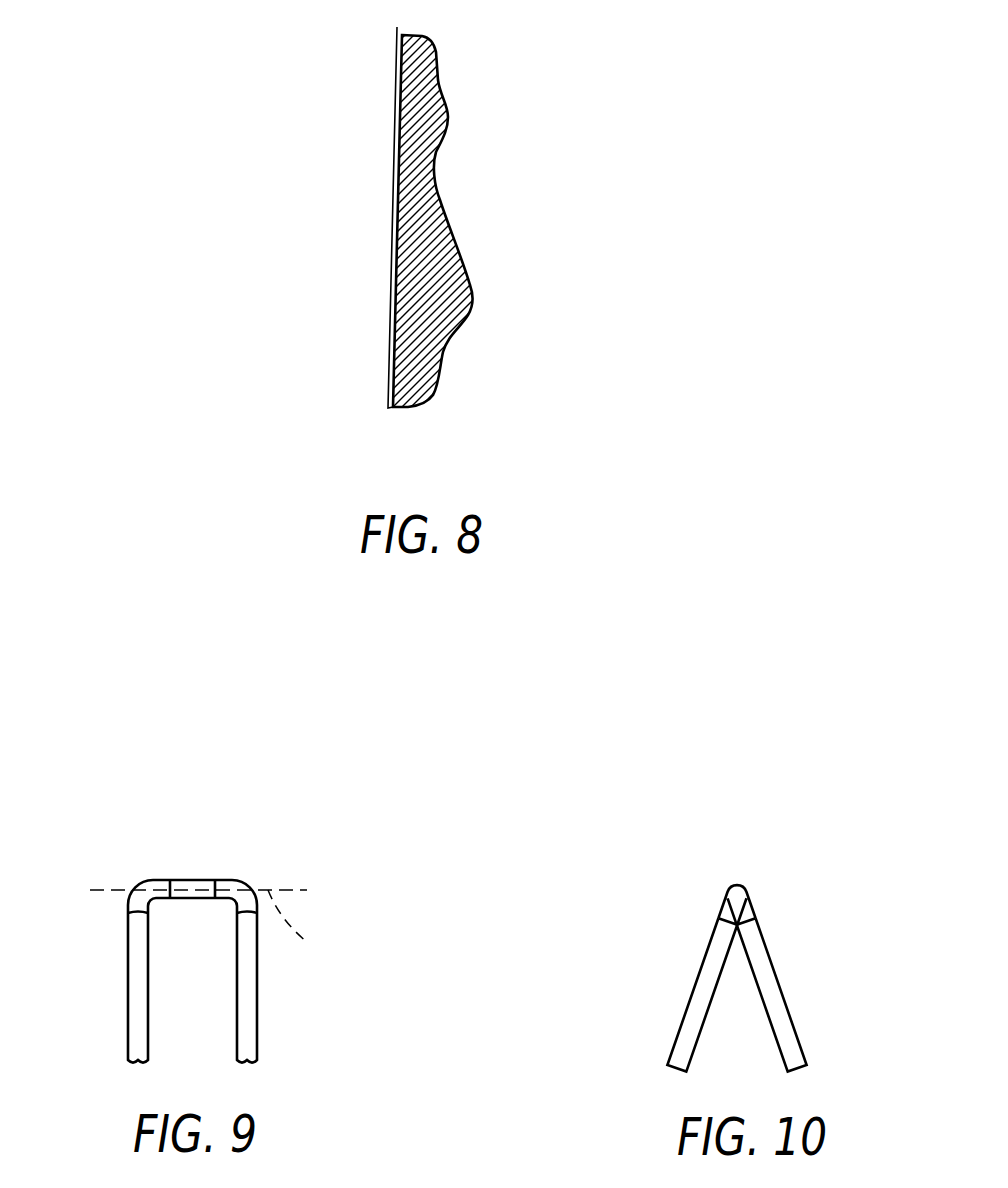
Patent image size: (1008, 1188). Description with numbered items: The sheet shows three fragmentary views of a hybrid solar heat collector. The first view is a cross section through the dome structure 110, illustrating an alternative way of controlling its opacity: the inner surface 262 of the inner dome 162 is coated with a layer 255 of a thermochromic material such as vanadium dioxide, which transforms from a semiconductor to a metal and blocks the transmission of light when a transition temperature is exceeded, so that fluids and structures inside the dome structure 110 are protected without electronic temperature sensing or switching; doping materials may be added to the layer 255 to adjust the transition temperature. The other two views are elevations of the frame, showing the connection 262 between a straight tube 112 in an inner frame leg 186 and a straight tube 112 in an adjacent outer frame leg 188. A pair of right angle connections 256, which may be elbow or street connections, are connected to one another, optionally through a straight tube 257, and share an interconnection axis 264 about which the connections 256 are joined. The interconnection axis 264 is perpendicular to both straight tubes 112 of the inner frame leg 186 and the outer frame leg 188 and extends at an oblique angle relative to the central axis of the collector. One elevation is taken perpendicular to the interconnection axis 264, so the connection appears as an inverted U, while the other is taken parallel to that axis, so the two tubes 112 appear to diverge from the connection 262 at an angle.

In FIG. 8, the dome structure 110 is at (346, 120).
In FIG. 8, the inner dome 162 is at (450, 109).
In FIG. 8, the layer 255 is at (395, 250).
In FIG. 8, the connection 262 is at (395, 332).
In FIG. 9, the connection 262 is at (162, 785).
In FIG. 10, the connection 262 is at (731, 857).
In FIG. 9, the right angle connections 256 is at (152, 878).
In FIG. 10, the right angle connections 256 is at (723, 903).
In FIG. 9, the straight tube 257 is at (187, 878).
In FIG. 9, the tubes 112 is at (128, 948).
In FIG. 10, the tubes 112 is at (700, 970).
In FIG. 9, the inner frame leg 186 is at (125, 987).
In FIG. 10, the inner frame leg 186 is at (790, 990).
In FIG. 9, the outer frame leg 188 is at (260, 1023).
In FIG. 10, the outer frame leg 188 is at (683, 998).
In FIG. 9, the interconnection axis 264 is at (319, 927).